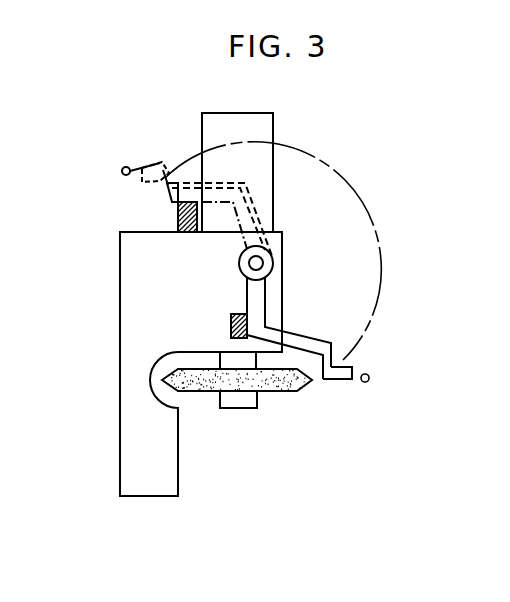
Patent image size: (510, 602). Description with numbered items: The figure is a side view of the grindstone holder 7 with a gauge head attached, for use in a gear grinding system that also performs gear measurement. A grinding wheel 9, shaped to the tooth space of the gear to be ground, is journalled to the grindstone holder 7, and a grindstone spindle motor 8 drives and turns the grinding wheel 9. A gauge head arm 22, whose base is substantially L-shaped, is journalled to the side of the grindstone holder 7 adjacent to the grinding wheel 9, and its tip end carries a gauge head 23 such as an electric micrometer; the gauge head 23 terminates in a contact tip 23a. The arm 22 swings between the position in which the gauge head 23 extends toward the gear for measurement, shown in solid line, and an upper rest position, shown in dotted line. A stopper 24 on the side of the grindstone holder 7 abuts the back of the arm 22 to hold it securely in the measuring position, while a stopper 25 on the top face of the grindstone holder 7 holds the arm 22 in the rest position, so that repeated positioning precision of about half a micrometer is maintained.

The grindstone holder 7 is at (143, 496).
The grindstone spindle motor 8 is at (273, 125).
The grinding wheel 9 is at (263, 390).
The gauge head arm 22 is at (317, 342).
The gauge head 23 is at (340, 380).
The contact member 23a is at (368, 375).
The stopper 24 is at (231, 328).
The stopper 25 is at (177, 222).